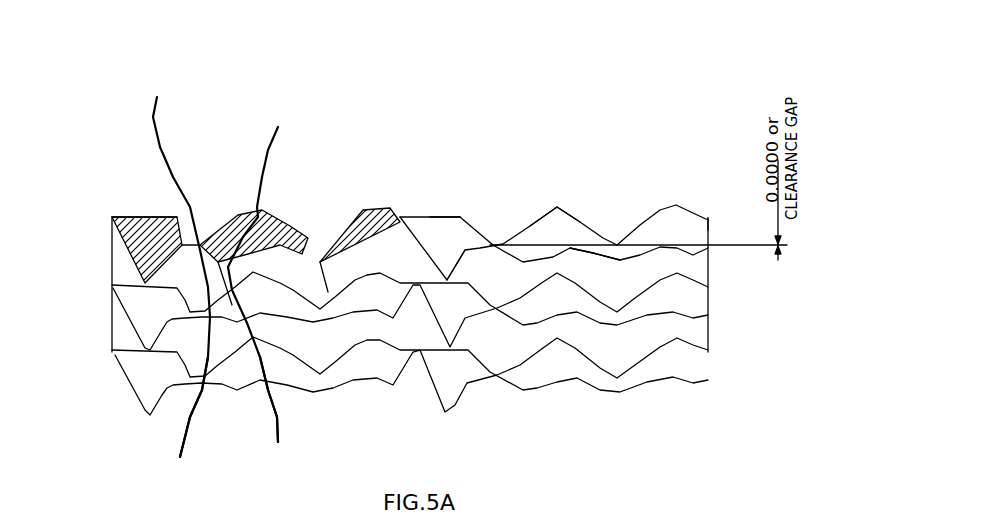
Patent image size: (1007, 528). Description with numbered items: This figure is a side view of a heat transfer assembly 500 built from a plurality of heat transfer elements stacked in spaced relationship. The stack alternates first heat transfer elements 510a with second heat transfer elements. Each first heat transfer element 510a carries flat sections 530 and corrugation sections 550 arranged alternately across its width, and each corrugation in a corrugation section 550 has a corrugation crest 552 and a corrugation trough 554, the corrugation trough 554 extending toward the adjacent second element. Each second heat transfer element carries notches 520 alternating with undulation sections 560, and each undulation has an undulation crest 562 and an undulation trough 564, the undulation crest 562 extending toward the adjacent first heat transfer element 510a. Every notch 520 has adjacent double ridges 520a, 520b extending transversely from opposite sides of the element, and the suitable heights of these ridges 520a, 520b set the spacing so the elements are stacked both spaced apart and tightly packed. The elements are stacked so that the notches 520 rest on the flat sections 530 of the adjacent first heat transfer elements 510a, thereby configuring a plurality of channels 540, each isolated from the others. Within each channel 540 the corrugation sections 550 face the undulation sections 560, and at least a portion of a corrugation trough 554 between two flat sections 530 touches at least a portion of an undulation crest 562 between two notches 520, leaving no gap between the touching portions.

The heat transfer assembly 500 is at (736, 64).
The first heat transfer element 510a is at (703, 205).
The notch 520 is at (424, 264).
The ridge 520a is at (408, 214).
The ridge 520b is at (446, 279).
The flat section 530 is at (444, 210).
The channel 540 is at (258, 211).
The corrugation section 550 is at (557, 206).
The corrugation crest 552 is at (281, 264).
The corrugation trough 554 is at (182, 255).
The undulation section 560 is at (599, 262).
The undulation crest 562 is at (196, 425).
The undulation trough 564 is at (289, 418).